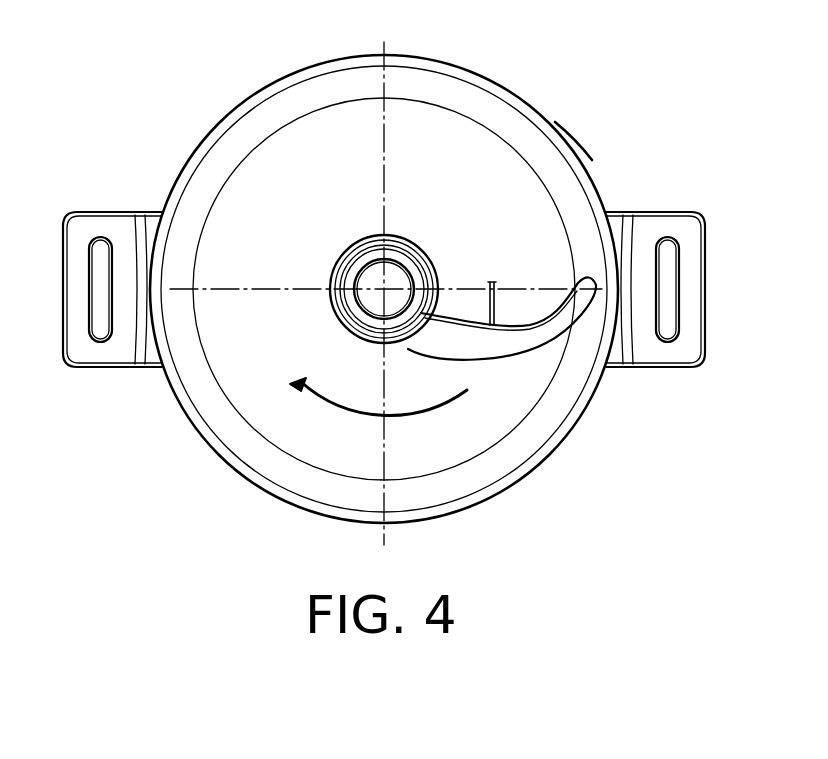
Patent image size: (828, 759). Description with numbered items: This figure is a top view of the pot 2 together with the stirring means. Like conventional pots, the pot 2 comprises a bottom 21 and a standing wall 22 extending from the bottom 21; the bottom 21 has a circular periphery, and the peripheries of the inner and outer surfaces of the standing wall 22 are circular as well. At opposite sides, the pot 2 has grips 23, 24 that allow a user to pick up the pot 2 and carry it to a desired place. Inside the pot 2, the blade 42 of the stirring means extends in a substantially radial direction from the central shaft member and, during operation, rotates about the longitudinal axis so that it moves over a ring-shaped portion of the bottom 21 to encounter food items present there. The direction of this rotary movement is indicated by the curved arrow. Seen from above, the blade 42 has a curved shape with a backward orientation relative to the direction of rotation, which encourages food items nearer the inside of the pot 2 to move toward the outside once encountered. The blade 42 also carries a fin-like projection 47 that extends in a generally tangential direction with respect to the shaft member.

The pot 2 is at (481, 148).
The bottom 21 is at (292, 148).
The standing wall 22 is at (563, 136).
The grip 23 is at (118, 232).
The grip 24 is at (646, 232).
The blade 42 is at (507, 348).
The fin-like projection 47 is at (500, 300).